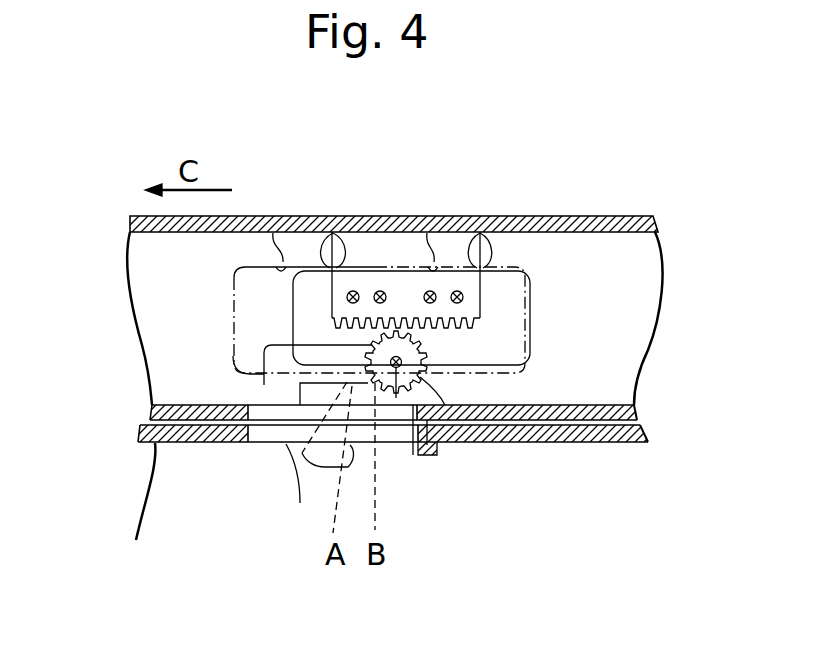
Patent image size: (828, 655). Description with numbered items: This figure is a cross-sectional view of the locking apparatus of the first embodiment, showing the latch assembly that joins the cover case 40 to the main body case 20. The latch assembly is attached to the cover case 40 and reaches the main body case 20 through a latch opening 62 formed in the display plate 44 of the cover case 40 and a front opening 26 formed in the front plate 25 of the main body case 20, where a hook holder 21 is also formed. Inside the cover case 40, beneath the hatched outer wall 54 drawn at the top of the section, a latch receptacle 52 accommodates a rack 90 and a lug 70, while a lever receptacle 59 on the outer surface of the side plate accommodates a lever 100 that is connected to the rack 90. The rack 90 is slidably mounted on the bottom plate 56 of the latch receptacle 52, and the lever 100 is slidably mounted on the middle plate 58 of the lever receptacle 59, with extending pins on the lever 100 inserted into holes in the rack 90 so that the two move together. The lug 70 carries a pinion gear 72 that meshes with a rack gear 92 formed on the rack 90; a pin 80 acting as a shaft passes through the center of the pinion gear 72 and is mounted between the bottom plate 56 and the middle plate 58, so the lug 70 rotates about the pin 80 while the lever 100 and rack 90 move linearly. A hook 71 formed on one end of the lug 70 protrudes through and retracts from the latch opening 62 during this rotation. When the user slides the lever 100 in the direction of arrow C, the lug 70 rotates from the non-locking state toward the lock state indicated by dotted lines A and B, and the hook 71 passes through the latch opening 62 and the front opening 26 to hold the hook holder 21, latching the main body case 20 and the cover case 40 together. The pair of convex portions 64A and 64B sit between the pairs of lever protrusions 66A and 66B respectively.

The main body case 20 is at (185, 446).
The hook holder 21 is at (427, 445).
The front plate 25 is at (143, 514).
The front opening 26 is at (254, 446).
The cover case 40 is at (672, 322).
The display plate 44 is at (152, 410).
The latch receptacle 52 is at (555, 373).
The top wall 54 is at (550, 214).
The bottom plate 56 is at (150, 272).
The middle plate 58 is at (528, 269).
The lever receptacle 59 is at (252, 277).
The latch opening 62 is at (345, 472).
The convex portion 64A is at (268, 211).
The convex portion 64B is at (420, 211).
The lever protrusion 66A is at (333, 211).
The lever protrusion 66B is at (485, 211).
The lug 70 is at (265, 347).
The hook 71 is at (290, 386).
The pinion gear 72 is at (433, 458).
The pin 80 is at (397, 480).
The rack 90 is at (378, 253).
The rack gear 92 is at (455, 348).
The lever 100 is at (528, 300).